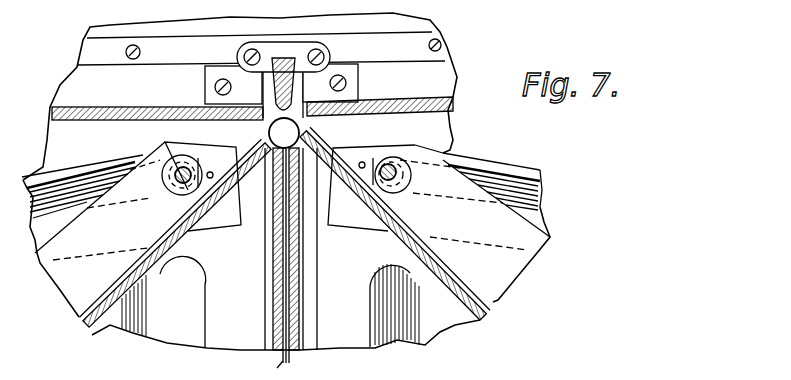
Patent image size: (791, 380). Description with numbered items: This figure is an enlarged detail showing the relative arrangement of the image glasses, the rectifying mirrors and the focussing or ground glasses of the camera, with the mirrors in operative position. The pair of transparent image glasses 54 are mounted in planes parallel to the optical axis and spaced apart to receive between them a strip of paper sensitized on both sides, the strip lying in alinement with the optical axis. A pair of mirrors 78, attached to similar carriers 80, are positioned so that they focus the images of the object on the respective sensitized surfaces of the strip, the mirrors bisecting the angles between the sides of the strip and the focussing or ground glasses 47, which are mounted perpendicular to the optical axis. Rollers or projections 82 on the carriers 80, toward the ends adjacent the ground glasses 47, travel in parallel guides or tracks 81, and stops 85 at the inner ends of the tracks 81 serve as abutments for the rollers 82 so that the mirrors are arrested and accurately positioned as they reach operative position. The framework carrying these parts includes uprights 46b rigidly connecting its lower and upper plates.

The upright 46b is at (285, 58).
The focussing or ground glass 47 is at (85, 110).
The image glass 54 is at (281, 260).
The mirror 78 is at (166, 245).
The carrier 80 is at (292, 201).
The guide or track 81 is at (63, 187).
The roller or projection 82 is at (182, 168).
The stop 85 is at (214, 160).